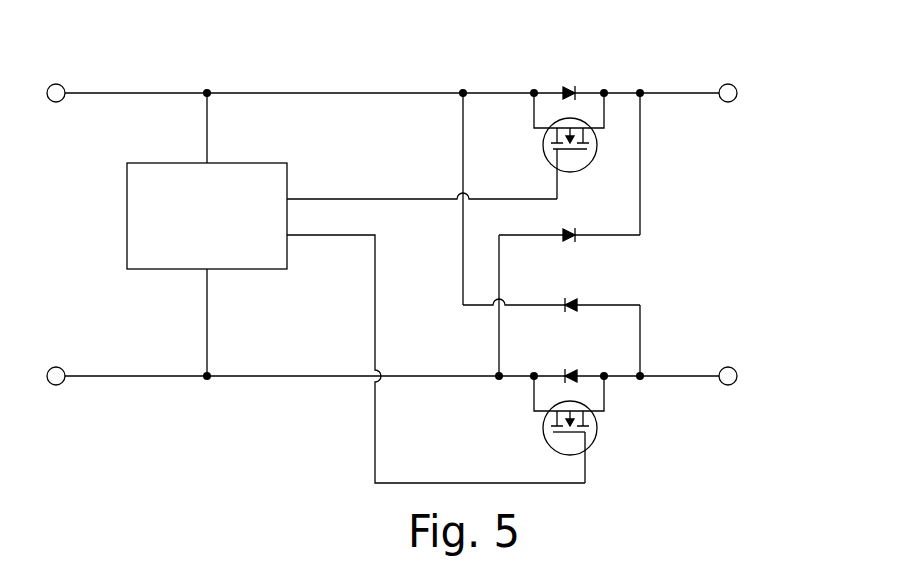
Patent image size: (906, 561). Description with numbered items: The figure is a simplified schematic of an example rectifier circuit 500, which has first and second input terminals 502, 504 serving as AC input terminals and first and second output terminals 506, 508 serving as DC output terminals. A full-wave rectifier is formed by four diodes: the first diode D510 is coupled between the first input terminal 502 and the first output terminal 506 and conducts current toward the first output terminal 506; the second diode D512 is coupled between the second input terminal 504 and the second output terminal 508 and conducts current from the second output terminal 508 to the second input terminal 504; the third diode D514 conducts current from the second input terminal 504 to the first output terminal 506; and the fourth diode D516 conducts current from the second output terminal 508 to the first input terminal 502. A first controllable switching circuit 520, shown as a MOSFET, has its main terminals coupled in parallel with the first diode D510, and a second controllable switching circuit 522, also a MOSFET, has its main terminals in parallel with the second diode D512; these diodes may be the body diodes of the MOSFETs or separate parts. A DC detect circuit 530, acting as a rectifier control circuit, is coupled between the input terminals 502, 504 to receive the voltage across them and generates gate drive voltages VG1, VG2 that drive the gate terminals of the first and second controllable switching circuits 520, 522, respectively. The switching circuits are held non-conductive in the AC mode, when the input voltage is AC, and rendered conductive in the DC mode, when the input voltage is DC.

The rectifier circuit 500 is at (324, 51).
The first input terminal 502 is at (56, 84).
The second input terminal 504 is at (58, 386).
The first output terminal 506 is at (729, 84).
The second output terminal 508 is at (734, 384).
The first controllable switching circuit 520 is at (544, 148).
The second controllable switching circuit 522 is at (598, 428).
The DC detect circuit 530 is at (153, 261).
The first diode D510 is at (575, 88).
The second diode D512 is at (565, 370).
The third diode D514 is at (565, 231).
The fourth diode D516 is at (570, 300).
The gate drive voltage VG1 is at (352, 198).
The gate drive voltage VG2 is at (376, 297).